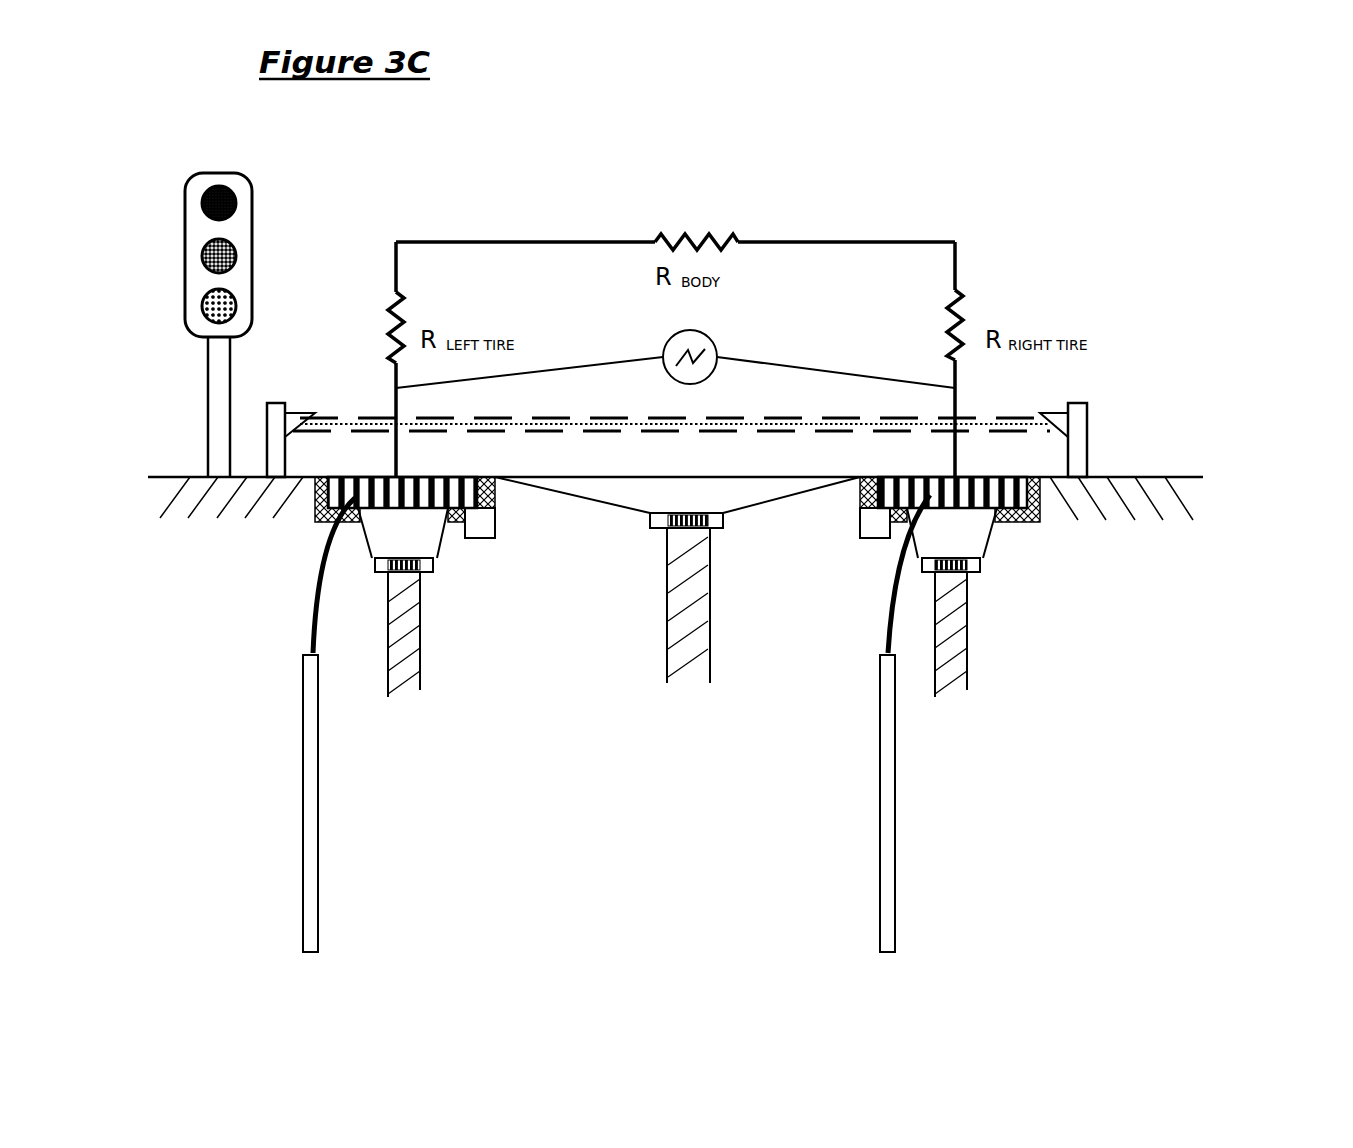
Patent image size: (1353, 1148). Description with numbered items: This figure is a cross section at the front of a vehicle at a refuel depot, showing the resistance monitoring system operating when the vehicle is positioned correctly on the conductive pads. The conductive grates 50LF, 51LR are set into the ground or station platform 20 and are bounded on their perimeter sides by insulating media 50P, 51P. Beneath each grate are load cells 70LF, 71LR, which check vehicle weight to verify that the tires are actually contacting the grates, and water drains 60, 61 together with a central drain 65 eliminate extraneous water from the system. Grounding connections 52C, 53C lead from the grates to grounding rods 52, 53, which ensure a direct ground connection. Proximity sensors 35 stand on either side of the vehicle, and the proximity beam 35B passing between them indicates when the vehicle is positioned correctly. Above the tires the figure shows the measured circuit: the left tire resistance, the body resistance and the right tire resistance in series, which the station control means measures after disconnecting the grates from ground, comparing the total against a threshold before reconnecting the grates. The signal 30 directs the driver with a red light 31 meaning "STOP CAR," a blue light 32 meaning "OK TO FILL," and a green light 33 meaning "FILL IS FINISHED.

The ground or station platform 20 is at (1203, 477).
The signal 30 is at (207, 423).
The red light 31 is at (237, 212).
The blue light 32 is at (237, 258).
The green light 33 is at (237, 310).
The proximity sensor 35 is at (275, 427).
The proximity beam 35B is at (694, 440).
The insulating media 50P is at (316, 514).
The conductive grate 50LF is at (423, 510).
The load cell 70LF is at (478, 523).
The grounding connection 52C is at (313, 617).
The grounding rod 52 is at (320, 890).
The water drain 60 is at (407, 683).
The water drain 65 is at (683, 665).
The insulating media 51P is at (1040, 522).
The conductive grate 51LR is at (978, 503).
The load cell 71LR is at (875, 523).
The grounding connection 53C is at (886, 627).
The grounding rod 53 is at (895, 918).
The water drain 61 is at (950, 683).